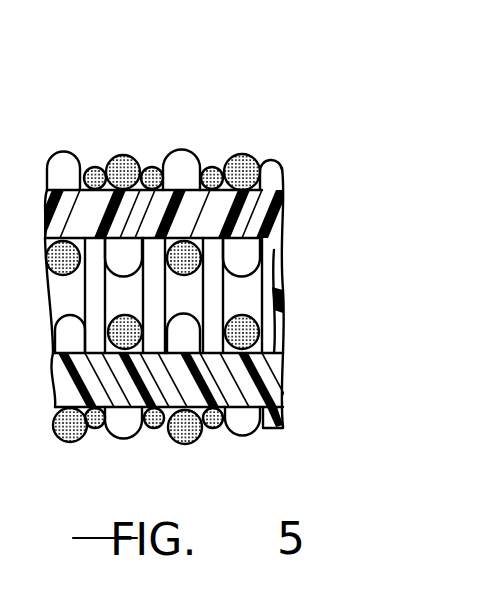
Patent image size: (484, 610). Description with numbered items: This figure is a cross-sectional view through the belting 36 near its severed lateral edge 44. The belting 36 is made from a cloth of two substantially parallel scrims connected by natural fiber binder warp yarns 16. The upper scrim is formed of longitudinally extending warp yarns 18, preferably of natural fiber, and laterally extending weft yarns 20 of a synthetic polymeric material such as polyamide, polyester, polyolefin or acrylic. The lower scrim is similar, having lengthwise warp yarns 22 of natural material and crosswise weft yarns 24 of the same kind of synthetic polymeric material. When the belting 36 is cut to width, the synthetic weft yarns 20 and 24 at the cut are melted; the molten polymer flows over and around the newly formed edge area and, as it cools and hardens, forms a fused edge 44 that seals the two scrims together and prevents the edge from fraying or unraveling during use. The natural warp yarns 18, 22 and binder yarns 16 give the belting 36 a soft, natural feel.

The binder warp yarns 16 is at (148, 170).
The warp yarns 18 is at (253, 163).
The weft yarns 20 is at (186, 196).
The warp yarns 22 is at (248, 327).
The weft yarns 24 is at (212, 430).
The belting 36 is at (190, 145).
The edge 44 is at (283, 217).